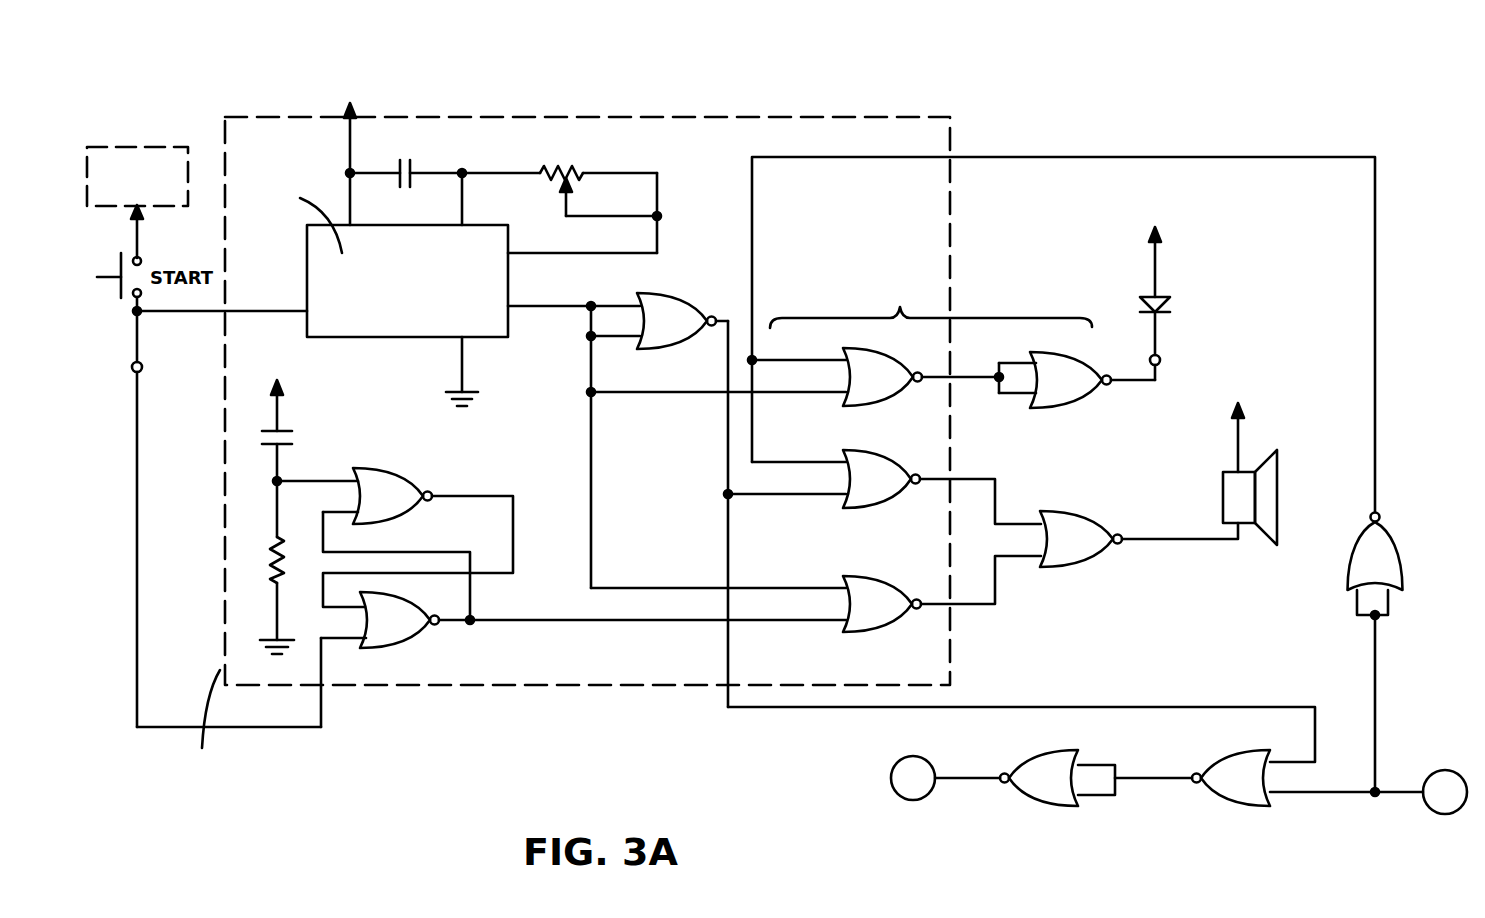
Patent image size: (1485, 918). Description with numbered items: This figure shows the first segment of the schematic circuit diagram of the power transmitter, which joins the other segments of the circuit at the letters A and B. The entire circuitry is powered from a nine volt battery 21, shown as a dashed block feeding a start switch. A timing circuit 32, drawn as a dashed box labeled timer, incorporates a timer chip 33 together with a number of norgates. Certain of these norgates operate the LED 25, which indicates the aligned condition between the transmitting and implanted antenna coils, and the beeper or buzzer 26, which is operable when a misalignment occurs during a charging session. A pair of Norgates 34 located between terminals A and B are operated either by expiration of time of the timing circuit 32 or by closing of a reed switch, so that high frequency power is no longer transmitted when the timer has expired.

The 9 volt battery 21 is at (130, 145).
The LED 25 is at (1143, 320).
The beeper or buzzer 26 is at (1278, 468).
The timing circuit 32 is at (538, 688).
The timer chip 33 is at (488, 337).
The pair of Norgates 34 is at (1036, 755).